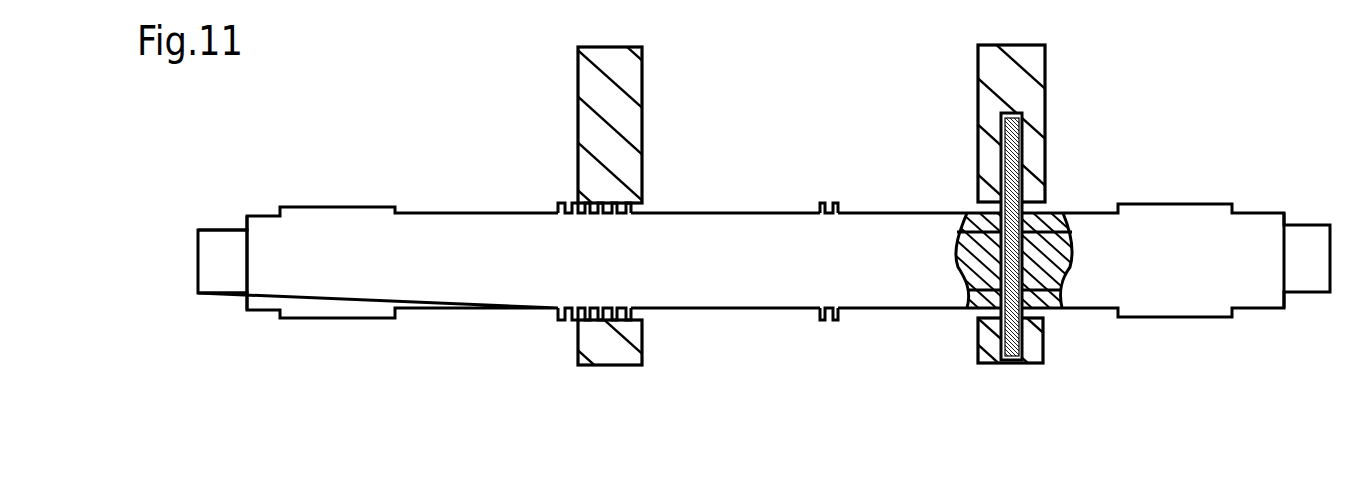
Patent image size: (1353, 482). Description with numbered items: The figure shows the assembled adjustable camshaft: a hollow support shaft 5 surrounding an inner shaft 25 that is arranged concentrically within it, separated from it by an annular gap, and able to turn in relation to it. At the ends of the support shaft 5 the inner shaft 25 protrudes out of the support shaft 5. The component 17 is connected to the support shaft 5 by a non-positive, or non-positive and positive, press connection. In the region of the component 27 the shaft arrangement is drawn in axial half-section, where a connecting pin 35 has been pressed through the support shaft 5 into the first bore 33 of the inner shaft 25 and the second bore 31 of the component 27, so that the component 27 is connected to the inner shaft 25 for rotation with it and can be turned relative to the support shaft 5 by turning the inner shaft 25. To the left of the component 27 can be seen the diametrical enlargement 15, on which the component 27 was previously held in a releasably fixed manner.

The support shaft 5 is at (1179, 218).
The diametrical enlargement 15 is at (685, 160).
The component 17 is at (627, 77).
The inner shaft 25 is at (218, 250).
The component 27 is at (1018, 77).
The second bore 31 is at (1045, 113).
The first bore 33 is at (1037, 306).
The connecting pin 35 is at (1008, 363).